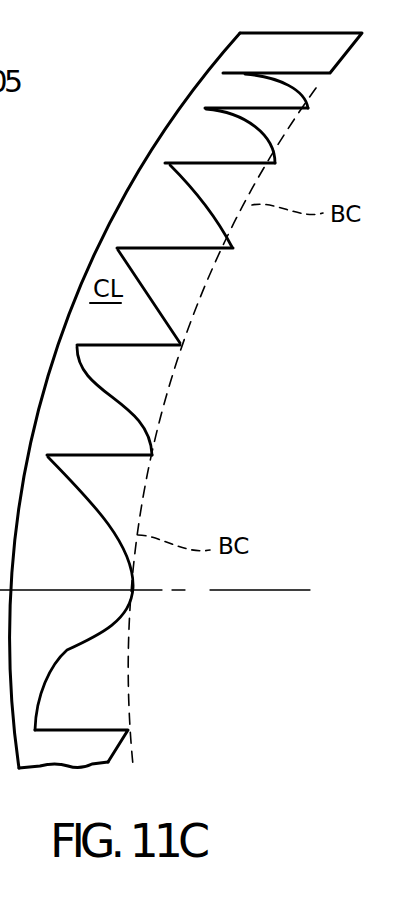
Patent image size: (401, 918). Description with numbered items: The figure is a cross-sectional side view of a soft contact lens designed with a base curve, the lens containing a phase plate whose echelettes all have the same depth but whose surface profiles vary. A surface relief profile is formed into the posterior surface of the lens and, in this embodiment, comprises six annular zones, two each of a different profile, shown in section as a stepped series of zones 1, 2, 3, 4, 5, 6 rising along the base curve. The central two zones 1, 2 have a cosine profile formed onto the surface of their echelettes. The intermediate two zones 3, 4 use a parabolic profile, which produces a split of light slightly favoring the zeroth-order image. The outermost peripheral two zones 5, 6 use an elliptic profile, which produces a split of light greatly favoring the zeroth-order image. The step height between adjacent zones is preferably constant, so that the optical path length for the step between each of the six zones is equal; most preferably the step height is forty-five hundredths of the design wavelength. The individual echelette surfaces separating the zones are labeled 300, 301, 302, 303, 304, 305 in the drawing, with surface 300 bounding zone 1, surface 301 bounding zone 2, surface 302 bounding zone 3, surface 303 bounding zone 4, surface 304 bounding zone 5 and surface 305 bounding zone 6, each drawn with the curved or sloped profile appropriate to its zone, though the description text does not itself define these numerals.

The first curved transition (segment 1 boundary) 300 is at (103, 520).
The second curved transition (segment 2 boundary) 301 is at (127, 417).
The third transition (segment 3 boundary) 302 is at (163, 307).
The fourth transition (segment 4 boundary) 303 is at (207, 212).
The fifth curved transition (segment 5 boundary) 304 is at (267, 137).
The sixth curved transition (segment 6 boundary) 305 is at (300, 90).
The first annular zone 1 is at (78, 557).
The second annular zone 2 is at (100, 442).
The third annular zone 3 is at (138, 325).
The fourth annular zone 4 is at (168, 229).
The fifth annular zone 5 is at (220, 152).
The sixth annular zone 6 is at (243, 103).